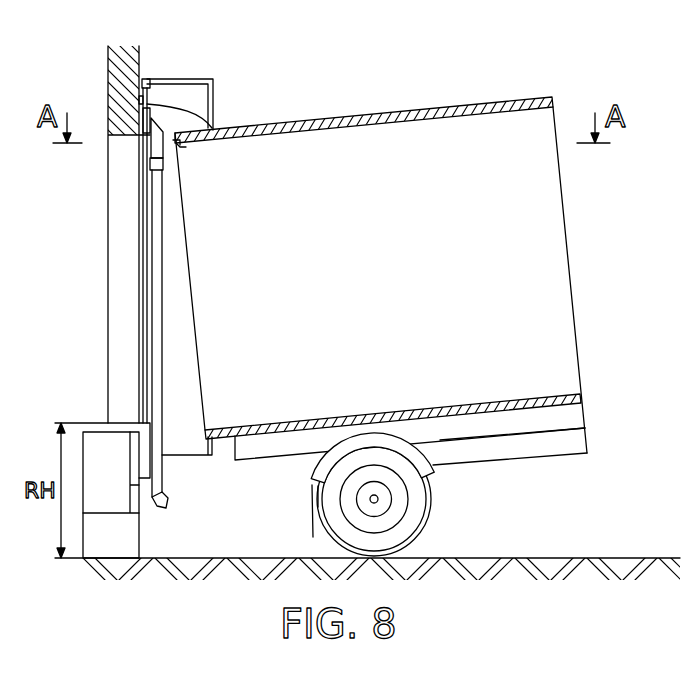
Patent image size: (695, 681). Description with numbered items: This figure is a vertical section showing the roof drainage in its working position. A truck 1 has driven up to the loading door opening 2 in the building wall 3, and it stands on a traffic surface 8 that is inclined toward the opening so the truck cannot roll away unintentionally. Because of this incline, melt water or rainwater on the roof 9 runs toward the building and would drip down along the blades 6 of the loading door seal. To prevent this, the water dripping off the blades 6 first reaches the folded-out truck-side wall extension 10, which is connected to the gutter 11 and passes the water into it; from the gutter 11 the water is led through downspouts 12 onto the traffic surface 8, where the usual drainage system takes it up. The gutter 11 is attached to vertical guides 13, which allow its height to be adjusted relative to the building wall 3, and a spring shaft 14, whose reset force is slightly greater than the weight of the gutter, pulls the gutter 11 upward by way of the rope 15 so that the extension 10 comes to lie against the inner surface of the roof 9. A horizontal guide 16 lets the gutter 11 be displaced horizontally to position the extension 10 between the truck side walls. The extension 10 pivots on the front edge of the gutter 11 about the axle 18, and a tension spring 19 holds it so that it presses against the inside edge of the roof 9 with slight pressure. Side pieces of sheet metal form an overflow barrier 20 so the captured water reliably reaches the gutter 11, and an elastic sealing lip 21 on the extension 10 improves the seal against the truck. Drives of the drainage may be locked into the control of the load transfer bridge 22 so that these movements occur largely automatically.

The truck 1 is at (397, 260).
The loading door opening 2 is at (118, 360).
The building wall 3 is at (118, 72).
The blade 6 is at (212, 124).
The traffic surface 8 is at (213, 558).
The roof 9 is at (390, 112).
The truck-side wall extension 10 is at (177, 150).
The gutter 11 is at (162, 146).
The downspout 12 is at (150, 318).
The vertical guides 13 is at (138, 100).
The spring shaft 14 is at (147, 83).
The rope 15 is at (147, 108).
The horizontal guide 16 is at (145, 112).
The axle 18 is at (177, 160).
The tension spring 19 is at (152, 128).
The overflow barrier 20 is at (180, 143).
The sealing lip 21 is at (195, 144).
The load transfer bridge 22 is at (93, 428).